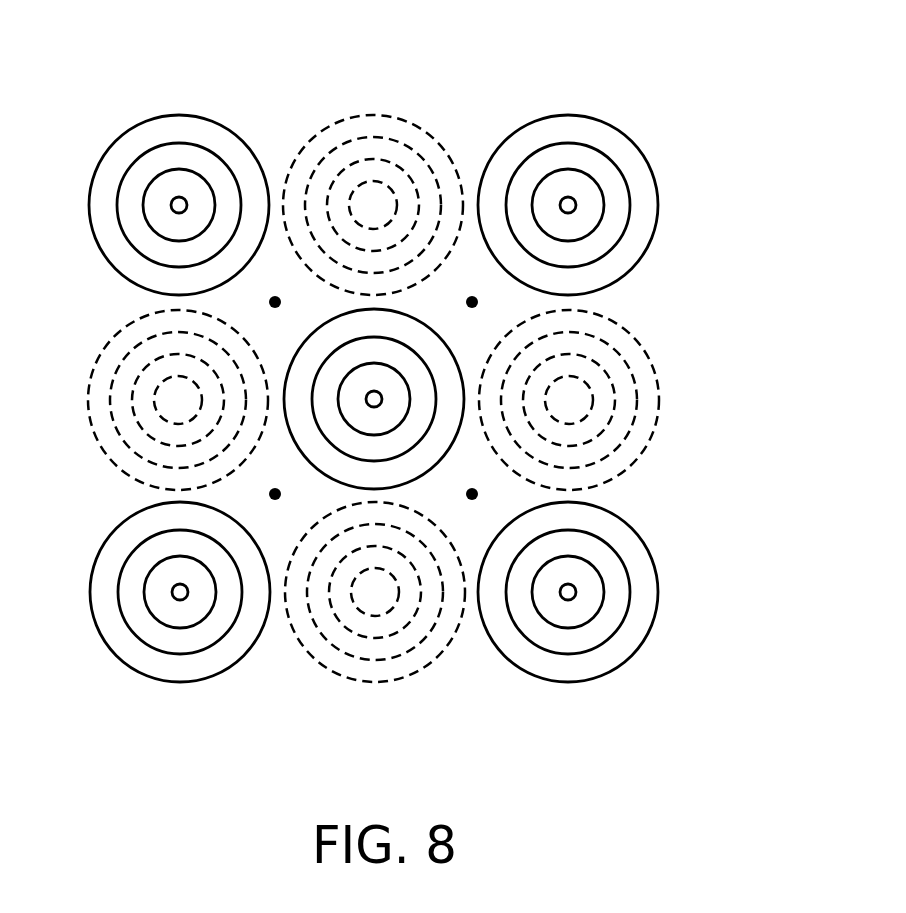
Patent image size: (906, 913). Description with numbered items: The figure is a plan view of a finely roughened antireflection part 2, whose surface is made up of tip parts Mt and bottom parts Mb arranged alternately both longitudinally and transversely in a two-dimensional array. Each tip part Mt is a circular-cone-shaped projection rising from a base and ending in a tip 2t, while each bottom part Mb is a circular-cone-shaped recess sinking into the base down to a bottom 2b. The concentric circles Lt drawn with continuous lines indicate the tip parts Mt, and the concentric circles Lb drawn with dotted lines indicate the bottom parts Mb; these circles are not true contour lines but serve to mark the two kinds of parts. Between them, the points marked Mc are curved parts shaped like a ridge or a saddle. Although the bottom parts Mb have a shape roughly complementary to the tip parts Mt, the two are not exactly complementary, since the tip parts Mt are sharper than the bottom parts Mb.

The finely roughened antireflection part 2 is at (668, 79).
The tip 2t is at (178, 197).
The bottom 2b is at (373, 200).
The concentric circles (contour lines of tip parts) Lt is at (230, 165).
The concentric circles (contour lines of bottom parts) Lb is at (432, 163).
The tip part Mt is at (648, 152).
The curved part Mc is at (478, 301).
The bottom part Mb is at (647, 448).